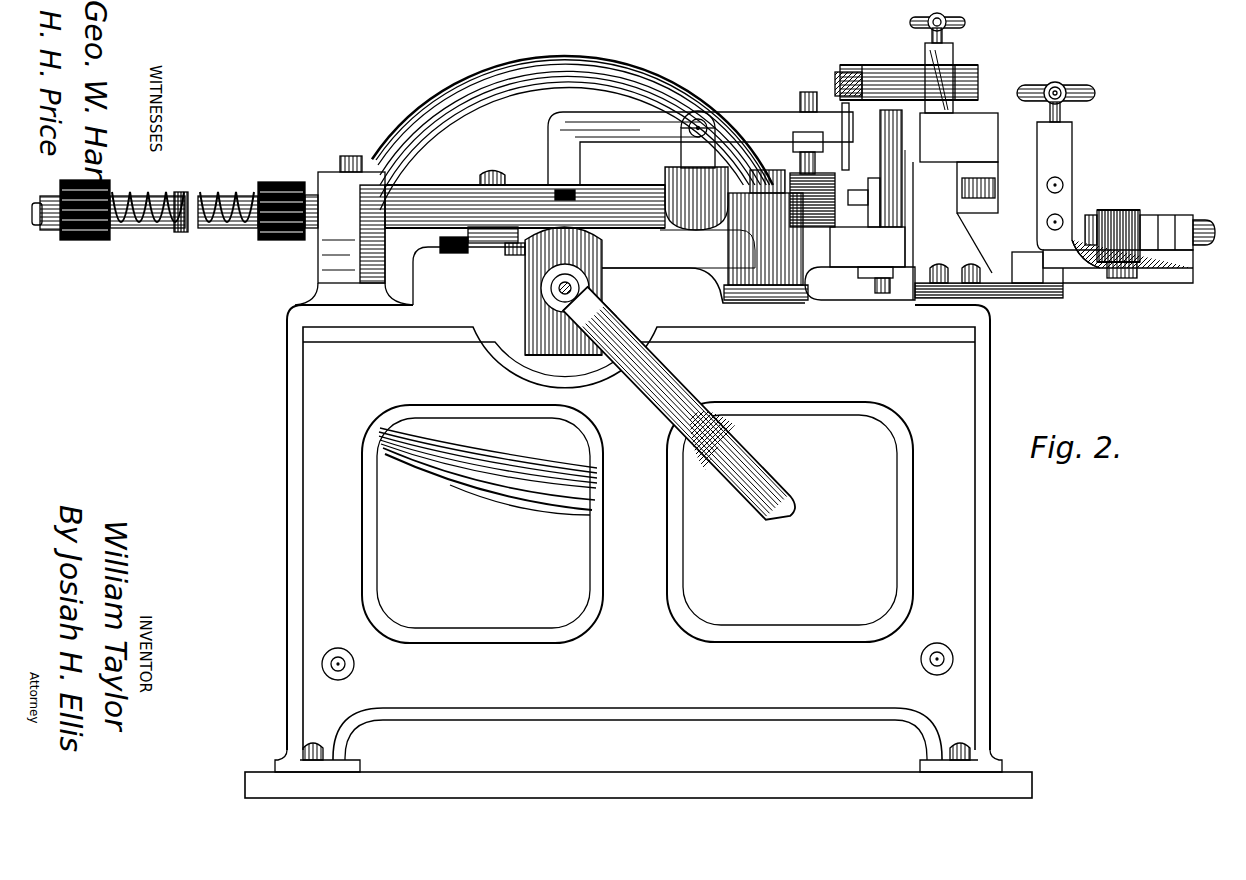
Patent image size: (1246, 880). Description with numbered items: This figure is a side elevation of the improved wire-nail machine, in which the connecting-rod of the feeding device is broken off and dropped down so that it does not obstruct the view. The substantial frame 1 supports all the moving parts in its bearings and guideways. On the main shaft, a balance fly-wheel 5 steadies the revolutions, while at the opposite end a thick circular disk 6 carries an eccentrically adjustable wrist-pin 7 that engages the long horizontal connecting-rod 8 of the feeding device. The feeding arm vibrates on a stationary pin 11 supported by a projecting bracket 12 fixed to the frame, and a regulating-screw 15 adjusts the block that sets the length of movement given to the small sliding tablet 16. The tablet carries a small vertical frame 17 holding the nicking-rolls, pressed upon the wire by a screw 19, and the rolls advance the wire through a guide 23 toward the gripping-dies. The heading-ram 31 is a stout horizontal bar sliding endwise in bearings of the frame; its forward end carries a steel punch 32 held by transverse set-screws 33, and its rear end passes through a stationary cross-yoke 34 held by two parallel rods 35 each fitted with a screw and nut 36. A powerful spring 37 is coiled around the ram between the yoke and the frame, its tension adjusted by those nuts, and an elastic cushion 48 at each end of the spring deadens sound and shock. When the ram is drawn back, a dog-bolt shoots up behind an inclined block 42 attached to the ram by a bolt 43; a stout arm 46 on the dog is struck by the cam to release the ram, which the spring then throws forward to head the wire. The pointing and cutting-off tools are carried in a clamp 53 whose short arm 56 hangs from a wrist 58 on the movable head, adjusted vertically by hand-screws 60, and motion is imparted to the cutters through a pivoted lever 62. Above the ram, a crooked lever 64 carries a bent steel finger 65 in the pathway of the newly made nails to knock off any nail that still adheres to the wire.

The frame 1 is at (638, 522).
The balance fly-wheel 5 is at (572, 121).
The circular disk 6 is at (552, 291).
The wrist-pin 7 is at (595, 312).
The connecting-rod 8 is at (679, 403).
The stationary pin 11 is at (1112, 232).
The bracket 12 is at (989, 293).
The regulating-screw 15 is at (1177, 221).
The sliding tablet 16 is at (1102, 261).
The vertical frame 17 is at (1068, 195).
The screw 19 is at (1056, 90).
The guide 23 is at (955, 206).
The heading-ram 31 is at (525, 196).
The steel punch 32 is at (824, 200).
The set-screws 33 is at (814, 153).
The cross bar or yoke 34 is at (84, 221).
The parallel rods 35 is at (186, 224).
The screw and nut 36 is at (46, 200).
The spring 37 is at (228, 199).
The inclined block 42 is at (482, 245).
The bolt 43 is at (494, 166).
The arm 46 is at (147, 224).
The elastic cushion 48 is at (262, 240).
The clamp 53 is at (877, 168).
The arm 56 is at (909, 71).
The wrist 58 is at (835, 77).
The hand-screws 60 is at (949, 63).
The pivoted lever 62 is at (867, 260).
The crooked lever 64 is at (700, 138).
The steel finger 65 is at (859, 136).